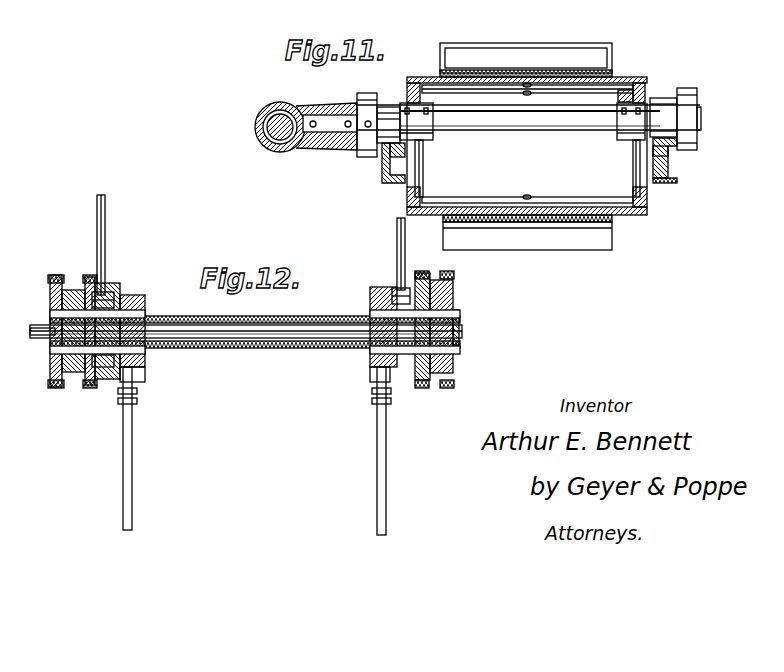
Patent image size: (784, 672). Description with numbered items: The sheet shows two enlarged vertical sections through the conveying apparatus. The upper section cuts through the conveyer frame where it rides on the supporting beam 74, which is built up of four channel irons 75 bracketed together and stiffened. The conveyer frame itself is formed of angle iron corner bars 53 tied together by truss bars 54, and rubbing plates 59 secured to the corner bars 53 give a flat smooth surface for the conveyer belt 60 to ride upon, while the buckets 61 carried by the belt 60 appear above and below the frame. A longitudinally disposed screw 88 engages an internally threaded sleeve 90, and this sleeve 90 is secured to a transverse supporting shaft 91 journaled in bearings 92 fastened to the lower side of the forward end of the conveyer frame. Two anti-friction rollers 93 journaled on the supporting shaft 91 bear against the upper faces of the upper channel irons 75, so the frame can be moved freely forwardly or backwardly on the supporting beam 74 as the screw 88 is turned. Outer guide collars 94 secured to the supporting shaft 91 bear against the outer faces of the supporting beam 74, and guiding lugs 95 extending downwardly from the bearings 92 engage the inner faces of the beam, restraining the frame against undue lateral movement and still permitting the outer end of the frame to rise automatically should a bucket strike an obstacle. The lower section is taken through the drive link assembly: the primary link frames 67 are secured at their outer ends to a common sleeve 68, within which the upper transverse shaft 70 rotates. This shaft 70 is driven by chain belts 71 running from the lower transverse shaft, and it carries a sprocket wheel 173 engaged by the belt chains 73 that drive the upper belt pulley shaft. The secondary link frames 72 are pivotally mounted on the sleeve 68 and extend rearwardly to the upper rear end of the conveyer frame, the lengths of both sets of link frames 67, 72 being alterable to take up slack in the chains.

In FIG. 11, the angle iron corner bars 53 is at (650, 95).
In FIG. 11, the truss bars 54 is at (558, 203).
In FIG. 11, the rubbing plates 59 is at (638, 50).
In FIG. 11, the conveyer belt 60 is at (522, 75).
In FIG. 11, the buckets 61 is at (487, 45).
In FIG. 12, the primary link frames 67 is at (133, 430).
In FIG. 12, the sleeve 68 is at (205, 349).
In FIG. 12, the upper transverse shaft 70 is at (463, 331).
In FIG. 12, the chain belts 71 is at (64, 380).
In FIG. 12, the secondary link frames 72 is at (106, 223).
In FIG. 12, the belt chains 73 is at (88, 280).
In FIG. 11, the supporting beam 74 is at (675, 182).
In FIG. 11, the channel irons 75 is at (385, 178).
In FIG. 11, the screw 88 is at (268, 106).
In FIG. 11, the internally threaded sleeve 90 is at (253, 125).
In FIG. 11, the supporting shaft 91 is at (545, 132).
In FIG. 11, the bearings 92 is at (434, 138).
In FIG. 11, the anti-friction rollers 93 is at (388, 104).
In FIG. 11, the outer guide collars 94 is at (366, 157).
In FIG. 11, the guiding lugs 95 is at (416, 152).
In FIG. 12, the sprocket wheel 173 is at (97, 380).